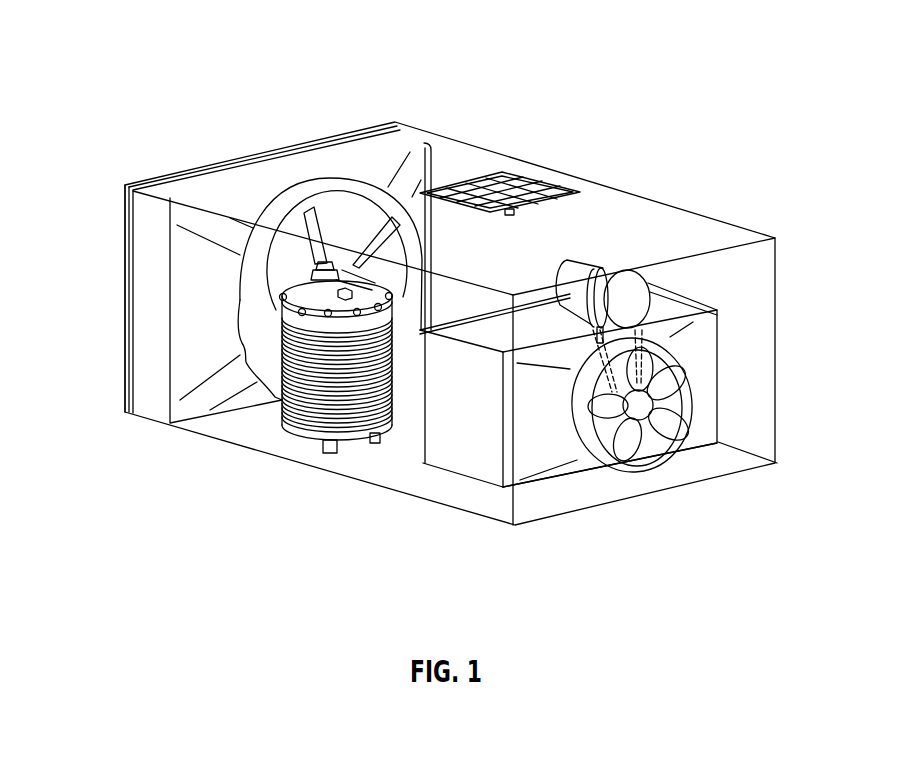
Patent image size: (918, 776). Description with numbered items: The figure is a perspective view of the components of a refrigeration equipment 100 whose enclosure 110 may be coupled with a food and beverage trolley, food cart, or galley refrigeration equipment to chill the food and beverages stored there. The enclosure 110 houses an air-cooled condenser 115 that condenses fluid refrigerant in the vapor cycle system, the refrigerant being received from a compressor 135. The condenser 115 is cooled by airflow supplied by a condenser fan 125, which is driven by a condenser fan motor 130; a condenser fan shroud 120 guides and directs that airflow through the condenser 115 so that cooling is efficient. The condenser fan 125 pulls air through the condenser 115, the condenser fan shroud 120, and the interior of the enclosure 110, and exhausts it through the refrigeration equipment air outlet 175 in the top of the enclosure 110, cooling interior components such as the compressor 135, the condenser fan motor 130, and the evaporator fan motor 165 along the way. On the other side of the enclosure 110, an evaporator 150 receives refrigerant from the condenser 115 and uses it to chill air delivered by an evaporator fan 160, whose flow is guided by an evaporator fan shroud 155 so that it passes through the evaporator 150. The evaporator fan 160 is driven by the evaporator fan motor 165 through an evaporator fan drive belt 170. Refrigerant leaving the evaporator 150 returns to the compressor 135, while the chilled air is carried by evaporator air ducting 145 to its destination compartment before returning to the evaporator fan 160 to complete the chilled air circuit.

The refrigeration equipment 100 is at (104, 61).
The enclosure 110 is at (620, 197).
The air-cooled condenser 115 is at (142, 220).
The condenser fan shroud 120 is at (197, 330).
The condenser fan 125 is at (313, 227).
The condenser fan motor 130 is at (357, 268).
The compressor 135 is at (313, 413).
The evaporator air ducting 145 is at (413, 430).
The evaporator 150 is at (483, 457).
The evaporator fan shroud 155 is at (550, 450).
The evaporator fan 160 is at (667, 422).
The evaporator fan motor 165 is at (637, 285).
The evaporator fan drive belt 170 is at (647, 363).
The refrigeration equipment air outlet 175 is at (510, 190).